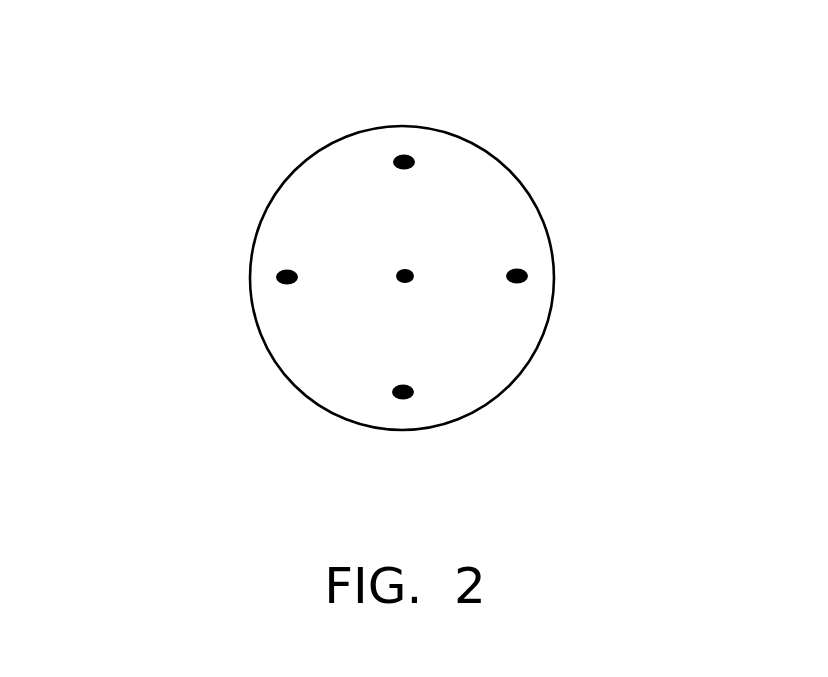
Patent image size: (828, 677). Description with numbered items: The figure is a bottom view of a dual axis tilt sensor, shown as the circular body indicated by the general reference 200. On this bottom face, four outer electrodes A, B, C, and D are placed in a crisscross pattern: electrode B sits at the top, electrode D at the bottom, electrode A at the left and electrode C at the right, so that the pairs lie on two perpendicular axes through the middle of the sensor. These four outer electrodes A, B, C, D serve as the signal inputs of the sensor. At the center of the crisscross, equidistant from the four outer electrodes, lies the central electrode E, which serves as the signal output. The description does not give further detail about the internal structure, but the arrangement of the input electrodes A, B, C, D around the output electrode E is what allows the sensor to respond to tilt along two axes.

The wafer / substrate 200 is at (190, 104).
The outer electrode A is at (287, 277).
The outer electrode B is at (404, 162).
The outer electrode C is at (517, 276).
The outer electrode D is at (403, 392).
The central electrode E is at (401, 294).